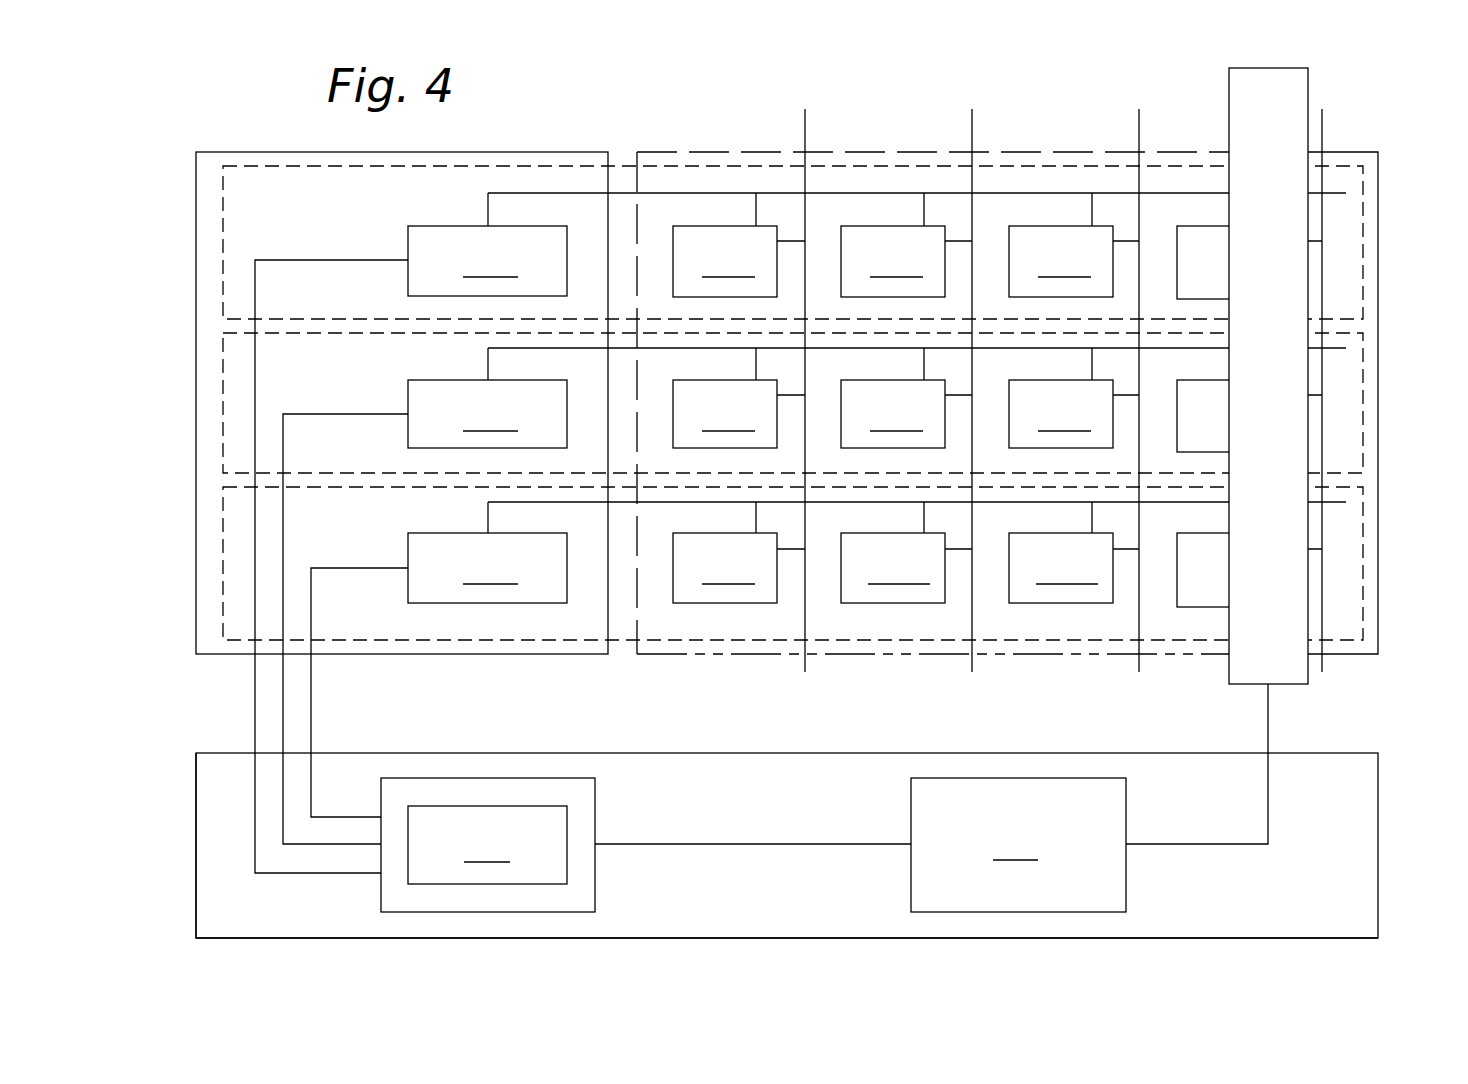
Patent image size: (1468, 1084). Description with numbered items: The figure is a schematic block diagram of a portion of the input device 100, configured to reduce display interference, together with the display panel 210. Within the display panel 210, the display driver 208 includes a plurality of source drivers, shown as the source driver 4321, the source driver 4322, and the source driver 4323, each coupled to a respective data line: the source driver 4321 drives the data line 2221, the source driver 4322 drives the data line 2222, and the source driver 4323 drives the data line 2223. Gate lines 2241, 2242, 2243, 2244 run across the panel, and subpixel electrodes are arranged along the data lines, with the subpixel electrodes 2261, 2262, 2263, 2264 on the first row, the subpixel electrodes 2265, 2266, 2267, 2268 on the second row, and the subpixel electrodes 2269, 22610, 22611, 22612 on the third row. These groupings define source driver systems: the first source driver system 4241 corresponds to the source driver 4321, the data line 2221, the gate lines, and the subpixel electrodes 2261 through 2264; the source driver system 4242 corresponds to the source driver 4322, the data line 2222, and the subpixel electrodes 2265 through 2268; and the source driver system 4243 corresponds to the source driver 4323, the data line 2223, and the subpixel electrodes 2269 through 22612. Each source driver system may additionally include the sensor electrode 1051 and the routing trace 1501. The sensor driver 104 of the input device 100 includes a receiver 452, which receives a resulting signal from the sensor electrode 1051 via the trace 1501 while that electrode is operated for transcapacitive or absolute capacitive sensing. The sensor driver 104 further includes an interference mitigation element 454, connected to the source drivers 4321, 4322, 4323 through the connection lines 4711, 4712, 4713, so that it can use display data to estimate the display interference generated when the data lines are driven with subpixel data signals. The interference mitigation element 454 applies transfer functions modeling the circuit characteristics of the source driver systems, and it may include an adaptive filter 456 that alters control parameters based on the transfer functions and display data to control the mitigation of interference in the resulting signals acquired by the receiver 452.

The input device 100 is at (178, 828).
The sensor driver 104 is at (1305, 752).
The sensor electrode 1051 is at (1308, 80).
The trace 1501 is at (1268, 722).
The display driver 208 is at (538, 152).
The display panel 210 is at (180, 92).
The data line 2221 is at (1330, 193).
The data line 2222 is at (1330, 348).
The data line 2223 is at (1330, 502).
The gate line 2241 is at (805, 128).
The gate line 2242 is at (972, 128).
The gate line 2243 is at (1139, 128).
The gate line 2244 is at (1322, 128).
The subpixel electrode 2261 is at (739, 245).
The subpixel electrode 2262 is at (906, 245).
The subpixel electrode 2263 is at (1074, 245).
The subpixel electrode 2264 is at (1187, 260).
The subpixel electrode 2265 is at (739, 398).
The subpixel electrode 2266 is at (906, 398).
The subpixel electrode 2267 is at (1074, 398).
The subpixel electrode 2268 is at (1187, 413).
The subpixel electrode 2269 is at (739, 552).
The subpixel electrode 22610 is at (906, 552).
The subpixel electrode 22611 is at (1074, 552).
The subpixel electrode 22612 is at (1187, 567).
The first source driver system 4241 is at (223, 188).
The source driver system 4242 is at (223, 355).
The source driver system 4243 is at (223, 509).
The source driver 4321 is at (487, 244).
The source driver 4322 is at (487, 398).
The source driver 4323 is at (487, 552).
The connection line 4711 is at (390, 258).
The connection line 4712 is at (390, 413).
The connection line 4713 is at (390, 566).
The receiver 452 is at (1018, 845).
The interference mitigation element 454 is at (587, 793).
The adaptive filter 456 is at (659, 845).